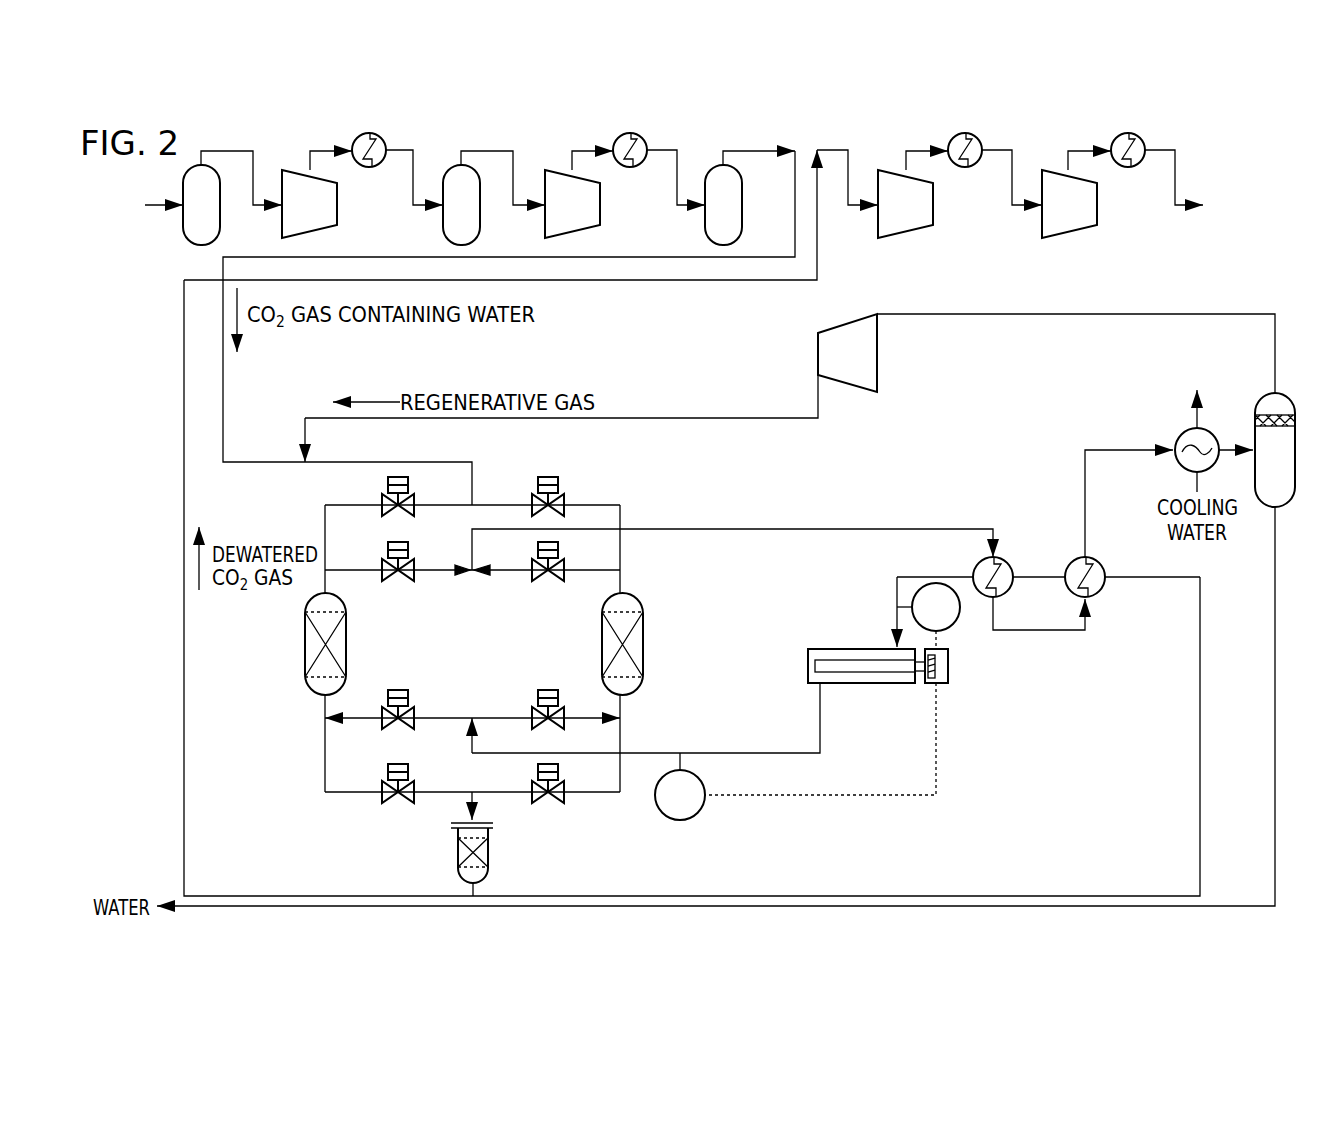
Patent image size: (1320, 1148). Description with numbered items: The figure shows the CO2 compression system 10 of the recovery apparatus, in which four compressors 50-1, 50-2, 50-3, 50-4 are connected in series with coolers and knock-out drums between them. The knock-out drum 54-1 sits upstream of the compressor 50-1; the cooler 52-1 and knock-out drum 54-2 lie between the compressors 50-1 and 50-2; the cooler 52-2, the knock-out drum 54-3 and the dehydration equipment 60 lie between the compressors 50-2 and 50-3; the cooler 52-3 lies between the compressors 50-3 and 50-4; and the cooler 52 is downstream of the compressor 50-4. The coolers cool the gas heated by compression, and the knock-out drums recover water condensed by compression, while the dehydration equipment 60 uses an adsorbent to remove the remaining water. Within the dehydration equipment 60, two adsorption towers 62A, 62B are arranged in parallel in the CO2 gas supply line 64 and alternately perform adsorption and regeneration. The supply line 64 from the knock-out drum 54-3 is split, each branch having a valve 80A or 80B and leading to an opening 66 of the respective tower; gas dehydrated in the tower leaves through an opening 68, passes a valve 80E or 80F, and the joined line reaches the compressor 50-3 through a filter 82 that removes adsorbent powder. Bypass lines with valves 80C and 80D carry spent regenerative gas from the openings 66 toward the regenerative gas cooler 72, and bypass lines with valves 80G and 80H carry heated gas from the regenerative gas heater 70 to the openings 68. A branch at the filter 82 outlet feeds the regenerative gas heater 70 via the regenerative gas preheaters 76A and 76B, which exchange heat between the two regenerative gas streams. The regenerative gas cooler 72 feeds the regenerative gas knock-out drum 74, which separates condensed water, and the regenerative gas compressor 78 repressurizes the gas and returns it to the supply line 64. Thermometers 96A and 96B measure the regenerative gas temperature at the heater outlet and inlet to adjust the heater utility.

The CO2 compression system 10 is at (1185, 134).
The dehydration equipment 60 is at (1243, 296).
The compressor 50-1 is at (326, 230).
The compressor 50-2 is at (598, 228).
The compressor 50-3 is at (932, 228).
The compressor 50-4 is at (1095, 228).
The cooler 52-1 is at (356, 137).
The cooler 52-2 is at (617, 137).
The cooler 52-3 is at (952, 137).
The cooler 52 is at (1115, 137).
The knock-out drum 54-1 is at (183, 240).
The knock-out drum 54-2 is at (455, 165).
The knock-out drum 54-3 is at (720, 165).
The CO2 gas supply line 64 is at (252, 460).
The opening 66 is at (333, 593).
The opening 68 is at (322, 696).
The adsorption tower 62A is at (305, 640).
The adsorption tower 62B is at (643, 640).
The regenerative gas heater 70 is at (858, 687).
The regenerative gas cooler 72 is at (1180, 427).
The regenerative gas knock-out drum 74 is at (1280, 393).
The regenerative gas preheater 76A is at (1005, 555).
The regenerative gas preheater 76B is at (1105, 590).
The regenerative gas compressor 78 is at (848, 385).
The valve 80A is at (388, 480).
The valve 80B is at (548, 477).
The valve 80C is at (390, 545).
The valve 80D is at (533, 568).
The valve 80E is at (398, 764).
The valve 80F is at (538, 772).
The valve 80G is at (398, 690).
The valve 80H is at (548, 690).
The filter 82 is at (455, 848).
The thermometer 96A is at (705, 780).
The thermometer 96B is at (958, 625).